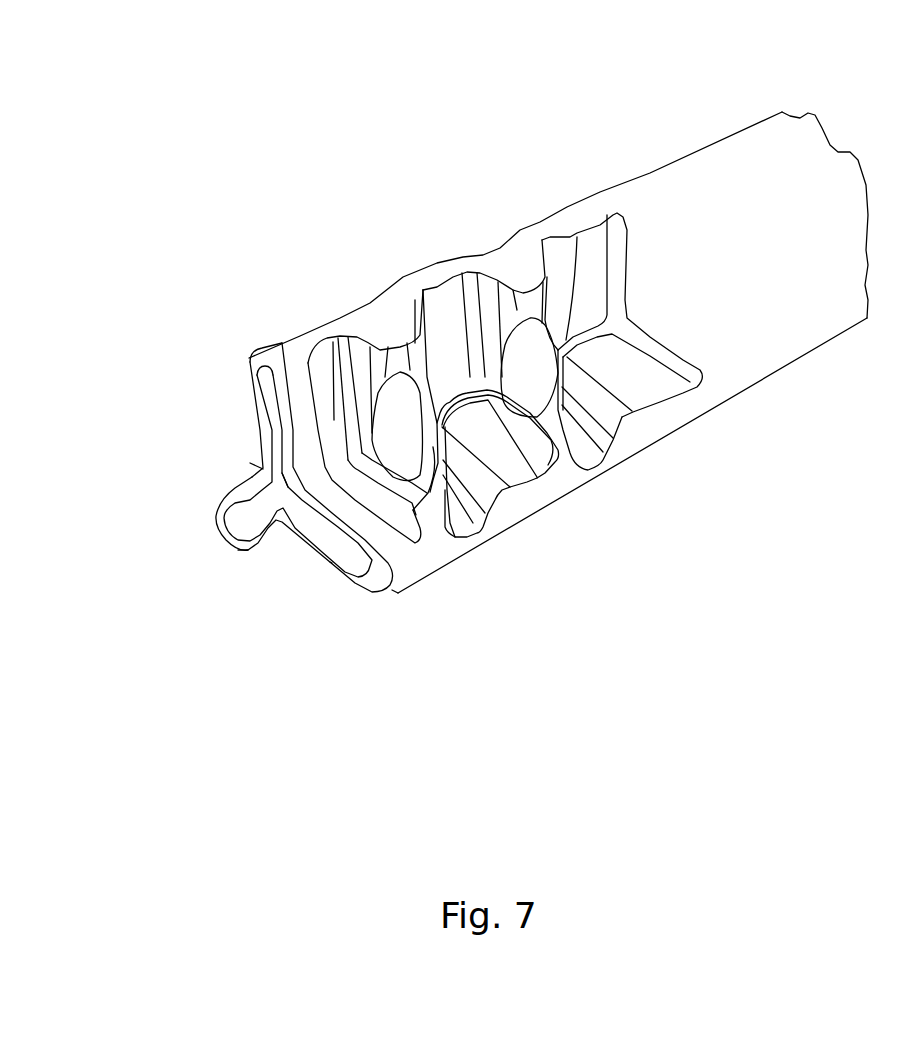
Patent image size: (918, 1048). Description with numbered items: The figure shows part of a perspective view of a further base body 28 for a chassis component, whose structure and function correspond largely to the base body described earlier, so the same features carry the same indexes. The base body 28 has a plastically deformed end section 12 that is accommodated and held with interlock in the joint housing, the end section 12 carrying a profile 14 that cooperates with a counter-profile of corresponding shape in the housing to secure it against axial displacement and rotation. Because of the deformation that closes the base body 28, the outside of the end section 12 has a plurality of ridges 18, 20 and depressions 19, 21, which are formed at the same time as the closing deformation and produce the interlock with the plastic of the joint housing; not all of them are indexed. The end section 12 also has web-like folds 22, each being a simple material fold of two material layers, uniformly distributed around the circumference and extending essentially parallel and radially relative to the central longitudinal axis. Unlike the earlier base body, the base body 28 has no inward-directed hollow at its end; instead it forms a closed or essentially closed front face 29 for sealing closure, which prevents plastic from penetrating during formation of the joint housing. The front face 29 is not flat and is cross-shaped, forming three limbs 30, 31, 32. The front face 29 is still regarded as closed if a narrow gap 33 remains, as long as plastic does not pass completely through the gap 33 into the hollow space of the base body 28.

The end section 12 is at (405, 235).
The profile 14 is at (485, 222).
The ridge 18 is at (380, 320).
The depression 19 is at (335, 357).
The ridge 20 is at (525, 300).
The depression 21 is at (553, 343).
The fold 22 is at (283, 327).
The base body 28 is at (718, 160).
The front face 29 is at (243, 472).
The limb 30 is at (226, 376).
The limb 31 is at (256, 565).
The limb 32 is at (325, 593).
The gap 33 is at (275, 497).